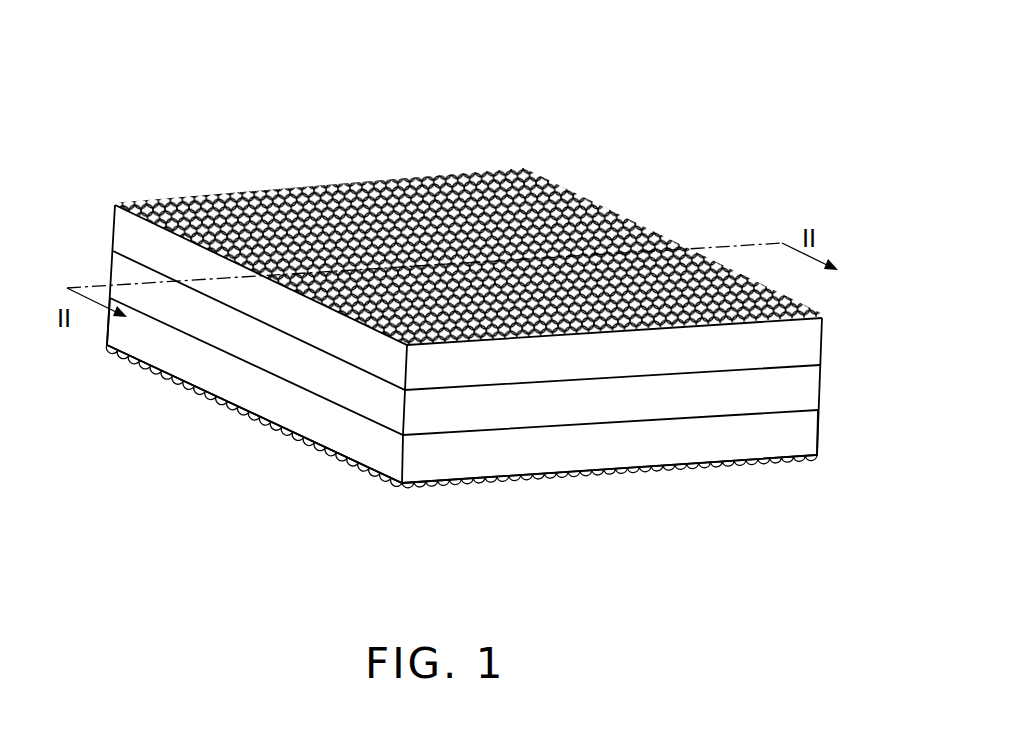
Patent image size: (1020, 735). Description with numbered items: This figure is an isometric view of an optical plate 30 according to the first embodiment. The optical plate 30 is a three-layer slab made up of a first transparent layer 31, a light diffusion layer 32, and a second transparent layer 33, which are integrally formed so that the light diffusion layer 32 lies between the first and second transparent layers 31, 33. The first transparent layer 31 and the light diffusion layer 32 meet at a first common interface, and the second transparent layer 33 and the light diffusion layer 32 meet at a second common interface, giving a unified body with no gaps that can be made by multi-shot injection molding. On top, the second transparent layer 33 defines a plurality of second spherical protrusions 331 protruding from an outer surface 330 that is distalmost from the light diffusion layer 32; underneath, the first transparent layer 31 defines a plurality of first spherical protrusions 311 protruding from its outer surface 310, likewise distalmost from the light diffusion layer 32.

The optical plate 30 is at (477, 44).
The first transparent layer 31 is at (803, 432).
The light diffusion layer 32 is at (803, 387).
The second transparent layer 33 is at (803, 340).
The outer surface 330 is at (115, 205).
The second spherical protrusions 331 is at (813, 308).
The outer surface 310 is at (108, 348).
The first spherical protrusions 311 is at (803, 457).